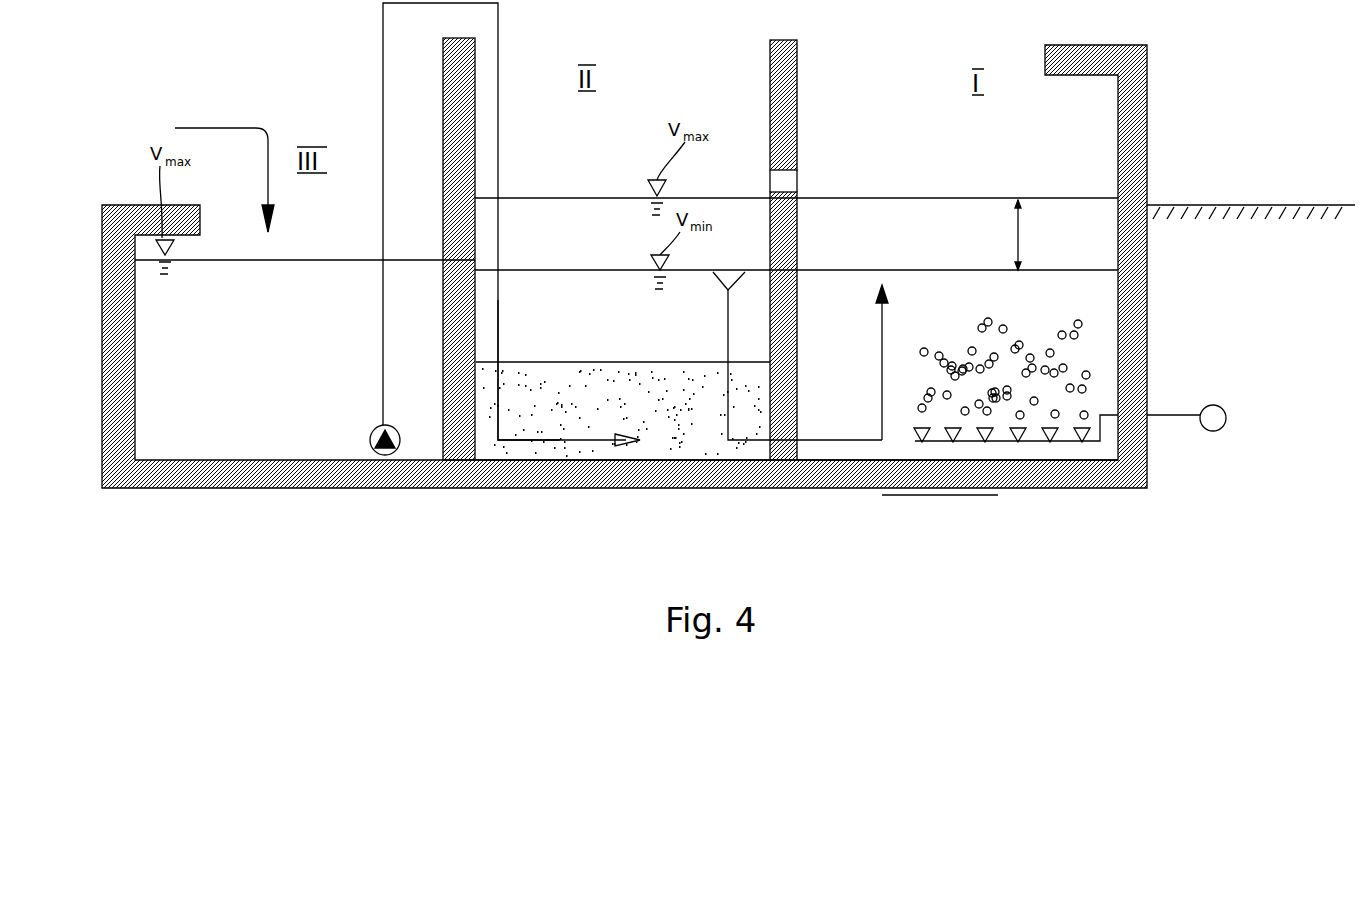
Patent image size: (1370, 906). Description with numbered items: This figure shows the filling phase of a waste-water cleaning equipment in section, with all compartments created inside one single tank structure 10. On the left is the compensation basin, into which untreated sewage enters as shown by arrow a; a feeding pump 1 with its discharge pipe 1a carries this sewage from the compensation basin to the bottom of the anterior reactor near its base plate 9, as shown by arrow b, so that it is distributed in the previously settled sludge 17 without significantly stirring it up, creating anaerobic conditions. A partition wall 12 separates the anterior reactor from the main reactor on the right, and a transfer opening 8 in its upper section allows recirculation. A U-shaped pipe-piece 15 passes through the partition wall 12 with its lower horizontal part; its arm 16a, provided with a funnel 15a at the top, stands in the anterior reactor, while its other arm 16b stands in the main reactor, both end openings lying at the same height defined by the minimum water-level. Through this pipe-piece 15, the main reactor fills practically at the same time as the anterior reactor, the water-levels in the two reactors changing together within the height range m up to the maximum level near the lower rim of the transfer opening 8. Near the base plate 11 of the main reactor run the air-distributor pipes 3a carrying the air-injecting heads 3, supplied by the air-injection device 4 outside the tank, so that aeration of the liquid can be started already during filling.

The feeding pump 1 is at (385, 488).
The discharge pipe 1a is at (498, 340).
The air-injecting heads 3 is at (958, 445).
The air-distributor pipes 3a is at (1028, 447).
The air-injection device 4 is at (1213, 431).
The transfer opening 8 is at (797, 185).
The base plate 9 is at (545, 455).
The tank structure 10 is at (1150, 128).
The base plate 11 is at (883, 493).
The partition wall 12 is at (797, 90).
The U-shaped pipe-piece 15 is at (840, 443).
The funnel 15a is at (722, 270).
The arm 16a is at (733, 335).
The arm 16b is at (887, 296).
The sludge 17 is at (697, 413).
The arrow a is at (226, 128).
The arrow b is at (628, 447).
The height range m is at (1023, 245).